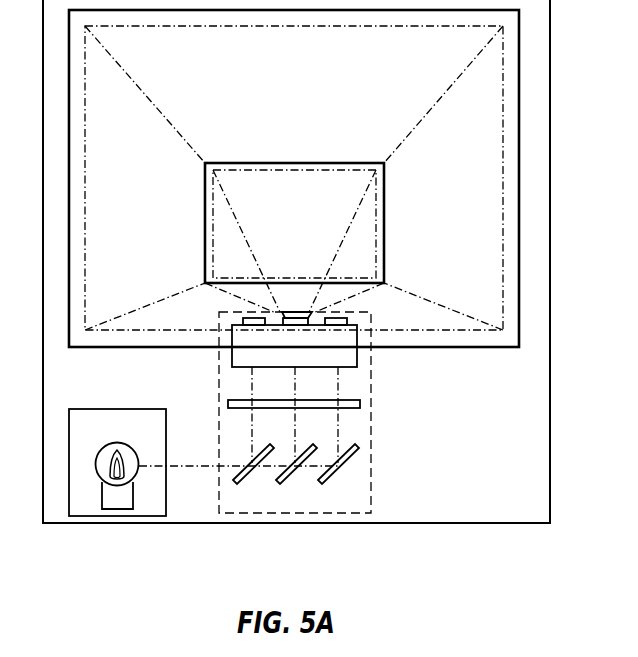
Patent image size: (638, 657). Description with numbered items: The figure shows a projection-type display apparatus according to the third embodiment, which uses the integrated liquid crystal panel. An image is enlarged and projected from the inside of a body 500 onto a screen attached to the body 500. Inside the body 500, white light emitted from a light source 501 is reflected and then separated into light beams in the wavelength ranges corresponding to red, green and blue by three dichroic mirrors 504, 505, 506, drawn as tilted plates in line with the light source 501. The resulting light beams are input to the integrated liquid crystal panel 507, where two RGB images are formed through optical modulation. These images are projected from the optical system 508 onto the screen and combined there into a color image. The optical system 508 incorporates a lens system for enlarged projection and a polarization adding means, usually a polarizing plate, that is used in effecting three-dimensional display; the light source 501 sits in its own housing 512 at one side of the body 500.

The body 500 is at (545, 514).
The light source 501 is at (114, 442).
The dichroic mirror 504 is at (233, 483).
The dichroic mirror 505 is at (277, 483).
The dichroic mirror 506 is at (318, 483).
The integrated liquid crystal panel 507 is at (360, 403).
The optical system 508 is at (357, 355).
The lamp housing 512 is at (128, 408).